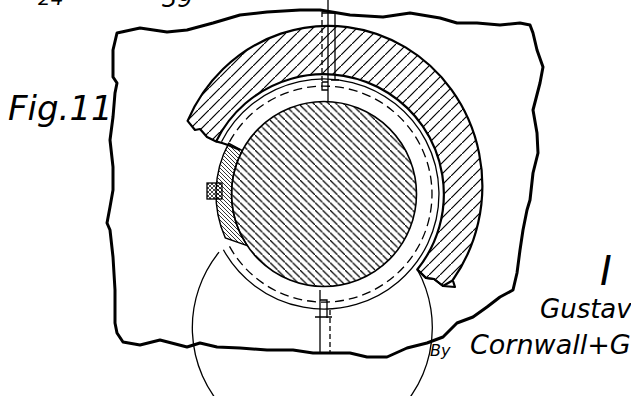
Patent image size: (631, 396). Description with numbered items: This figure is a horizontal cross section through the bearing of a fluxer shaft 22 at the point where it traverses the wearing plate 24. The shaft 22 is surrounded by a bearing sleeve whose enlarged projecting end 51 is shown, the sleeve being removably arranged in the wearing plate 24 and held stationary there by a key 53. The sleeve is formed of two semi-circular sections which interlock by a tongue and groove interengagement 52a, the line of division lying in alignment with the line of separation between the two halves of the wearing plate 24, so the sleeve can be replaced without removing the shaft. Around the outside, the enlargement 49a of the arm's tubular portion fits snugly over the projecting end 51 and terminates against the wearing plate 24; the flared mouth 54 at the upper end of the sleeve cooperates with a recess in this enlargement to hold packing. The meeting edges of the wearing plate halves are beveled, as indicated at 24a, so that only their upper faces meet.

The shaft 22 is at (371, 134).
The wearing plate 24 is at (528, 154).
The beveled meeting edges 24a is at (438, 8).
The enlargement of tubular portion 49a is at (197, 101).
The projecting end of sleeve 51 is at (213, 223).
The tongue and groove interengagement 52a is at (319, 88).
The key 53 is at (207, 189).
The flared mouth 54 is at (424, 149).